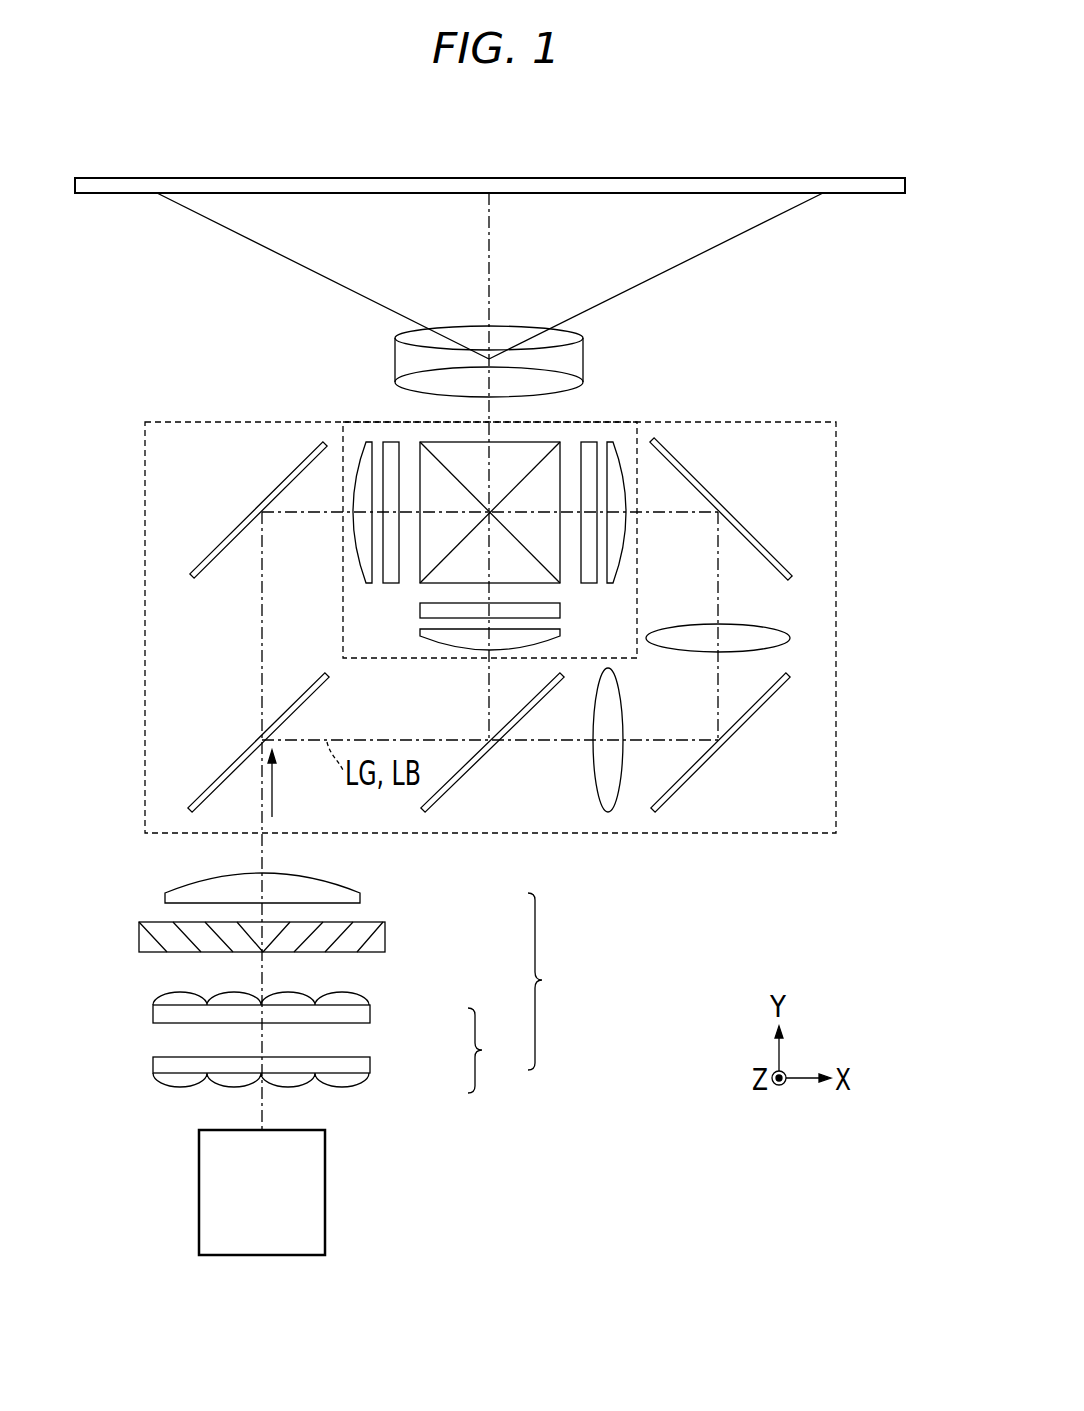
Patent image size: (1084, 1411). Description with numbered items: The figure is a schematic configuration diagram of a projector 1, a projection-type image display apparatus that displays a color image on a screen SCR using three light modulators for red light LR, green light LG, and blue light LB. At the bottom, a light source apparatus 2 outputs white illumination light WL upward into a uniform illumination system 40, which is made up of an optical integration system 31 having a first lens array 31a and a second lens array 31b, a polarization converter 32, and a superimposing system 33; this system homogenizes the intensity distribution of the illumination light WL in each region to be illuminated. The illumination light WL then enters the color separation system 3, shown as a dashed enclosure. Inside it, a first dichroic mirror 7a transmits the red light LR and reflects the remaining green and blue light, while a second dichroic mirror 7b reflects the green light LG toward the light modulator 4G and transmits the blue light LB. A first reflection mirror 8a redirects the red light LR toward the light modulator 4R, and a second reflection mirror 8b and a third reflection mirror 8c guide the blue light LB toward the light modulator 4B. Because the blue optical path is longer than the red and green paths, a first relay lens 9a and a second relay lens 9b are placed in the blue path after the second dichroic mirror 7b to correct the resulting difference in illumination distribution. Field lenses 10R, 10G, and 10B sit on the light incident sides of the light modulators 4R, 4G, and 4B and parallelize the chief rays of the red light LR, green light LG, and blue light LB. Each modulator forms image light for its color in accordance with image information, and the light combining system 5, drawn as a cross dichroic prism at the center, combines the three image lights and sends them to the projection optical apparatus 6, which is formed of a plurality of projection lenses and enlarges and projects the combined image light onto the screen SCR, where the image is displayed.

The projector 1 is at (866, 278).
The light source apparatus 2 is at (326, 1180).
The color separation system 3 is at (144, 555).
The light modulator 4R is at (387, 440).
The light modulator 4G is at (420, 610).
The light modulator 4B is at (588, 440).
The light combining system 5 is at (513, 452).
The projection optical apparatus 6 is at (470, 330).
The first dichroic mirror 7a is at (245, 760).
The second dichroic mirror 7b is at (468, 773).
The first reflection mirror 8a is at (236, 523).
The second reflection mirror 8b is at (742, 723).
The third reflection mirror 8c is at (748, 528).
The first relay lens 9a is at (594, 762).
The second relay lens 9b is at (743, 624).
The field lens 10R is at (362, 440).
The field lens 10G is at (420, 637).
The field lens 10B is at (612, 440).
The optical integration system 31 is at (493, 1050).
The first lens array 31a is at (370, 1064).
The second lens array 31b is at (370, 1014).
The polarization converter 32 is at (385, 937).
The superimposing system 33 is at (360, 884).
The uniform illumination system 40 is at (554, 981).
The screen SCR is at (862, 185).
The illumination light WL is at (277, 800).
The red light LR is at (261, 648).
The green light LG is at (488, 694).
The blue light LB is at (717, 698).